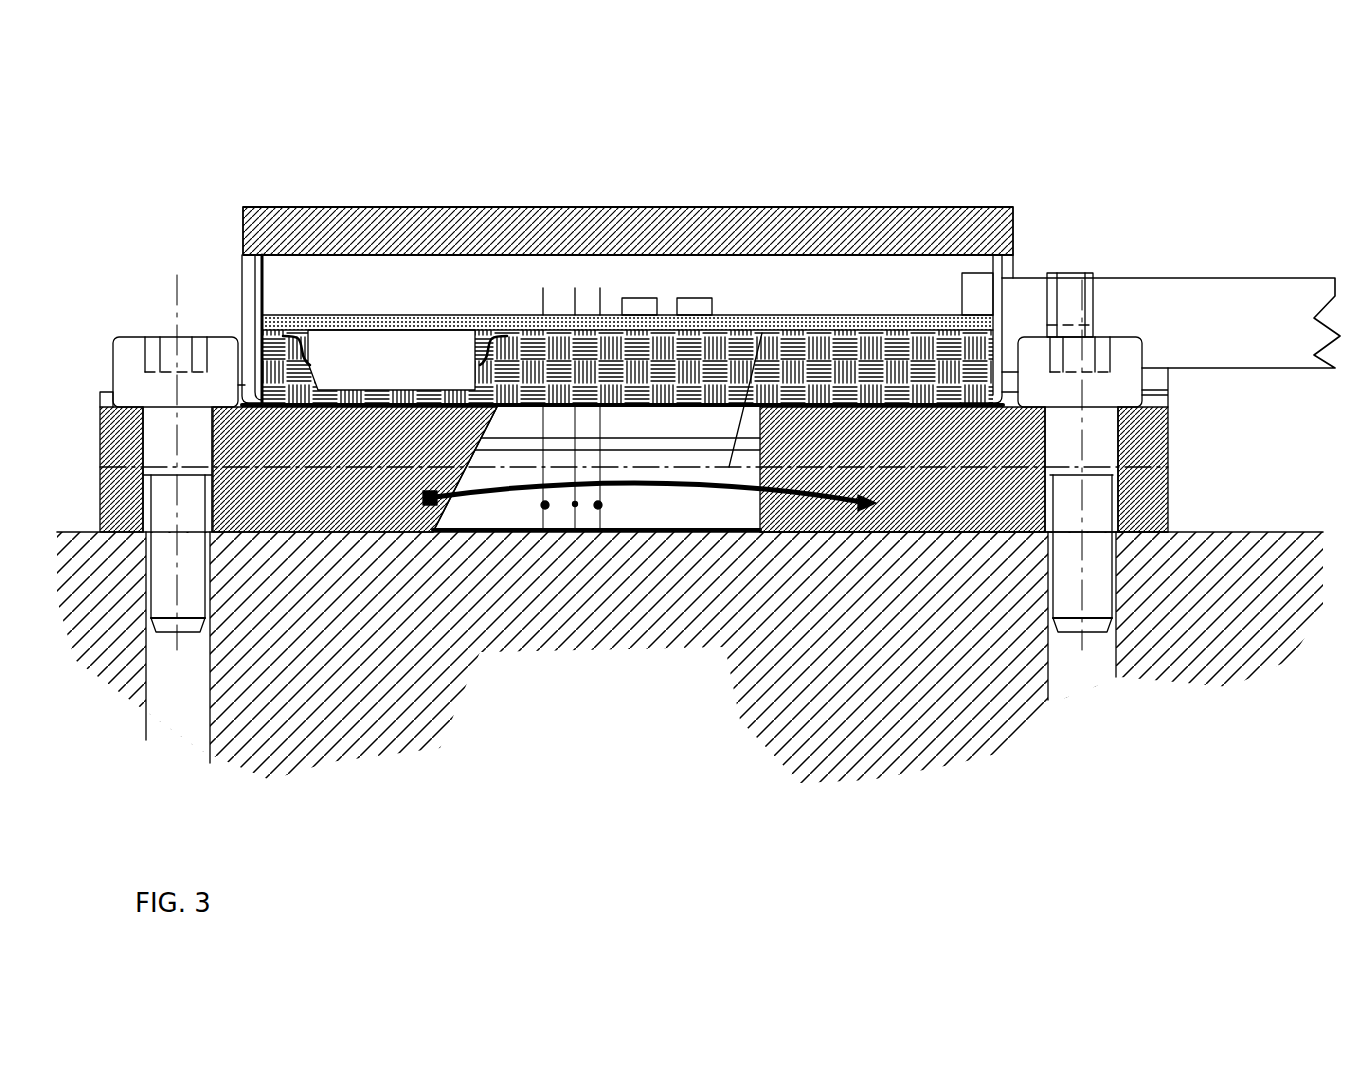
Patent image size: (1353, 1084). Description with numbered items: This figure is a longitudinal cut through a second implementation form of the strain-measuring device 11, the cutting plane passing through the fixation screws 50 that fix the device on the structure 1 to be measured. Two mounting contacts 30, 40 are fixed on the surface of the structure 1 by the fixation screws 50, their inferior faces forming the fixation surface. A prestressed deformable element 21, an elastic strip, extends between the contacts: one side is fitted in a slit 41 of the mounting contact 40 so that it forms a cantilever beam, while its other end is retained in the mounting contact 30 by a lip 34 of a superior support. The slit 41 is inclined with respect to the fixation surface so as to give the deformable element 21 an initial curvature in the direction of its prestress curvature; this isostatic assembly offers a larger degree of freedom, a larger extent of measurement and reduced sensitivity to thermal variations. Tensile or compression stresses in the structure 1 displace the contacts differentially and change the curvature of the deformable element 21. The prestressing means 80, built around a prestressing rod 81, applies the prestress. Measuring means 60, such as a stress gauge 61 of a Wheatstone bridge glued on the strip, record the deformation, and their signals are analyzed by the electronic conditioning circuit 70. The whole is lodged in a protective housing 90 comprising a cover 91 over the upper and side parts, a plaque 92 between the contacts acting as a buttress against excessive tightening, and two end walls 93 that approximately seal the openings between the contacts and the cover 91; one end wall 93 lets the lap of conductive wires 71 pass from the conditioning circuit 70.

The structure to be measured 1 is at (290, 656).
The strain-measuring device 11 is at (965, 172).
The deformable element 21 is at (730, 533).
The mounting contact 30 is at (296, 516).
The lip 34 is at (403, 533).
The mounting contact 40 is at (1010, 522).
The slit 41 is at (833, 533).
The fixation screws 50 is at (138, 343).
The measuring means 60 is at (556, 456).
The stress gauge 61 is at (530, 533).
The electronic conditioning circuit 70 is at (852, 313).
The lap of conductive wires 71 is at (1185, 313).
The prestressing means 80 is at (698, 420).
The prestressing rod 81 is at (765, 313).
The protective housing 90 is at (388, 196).
The cover 91 is at (280, 222).
The plaque 92 is at (637, 533).
The end walls 93 is at (257, 285).